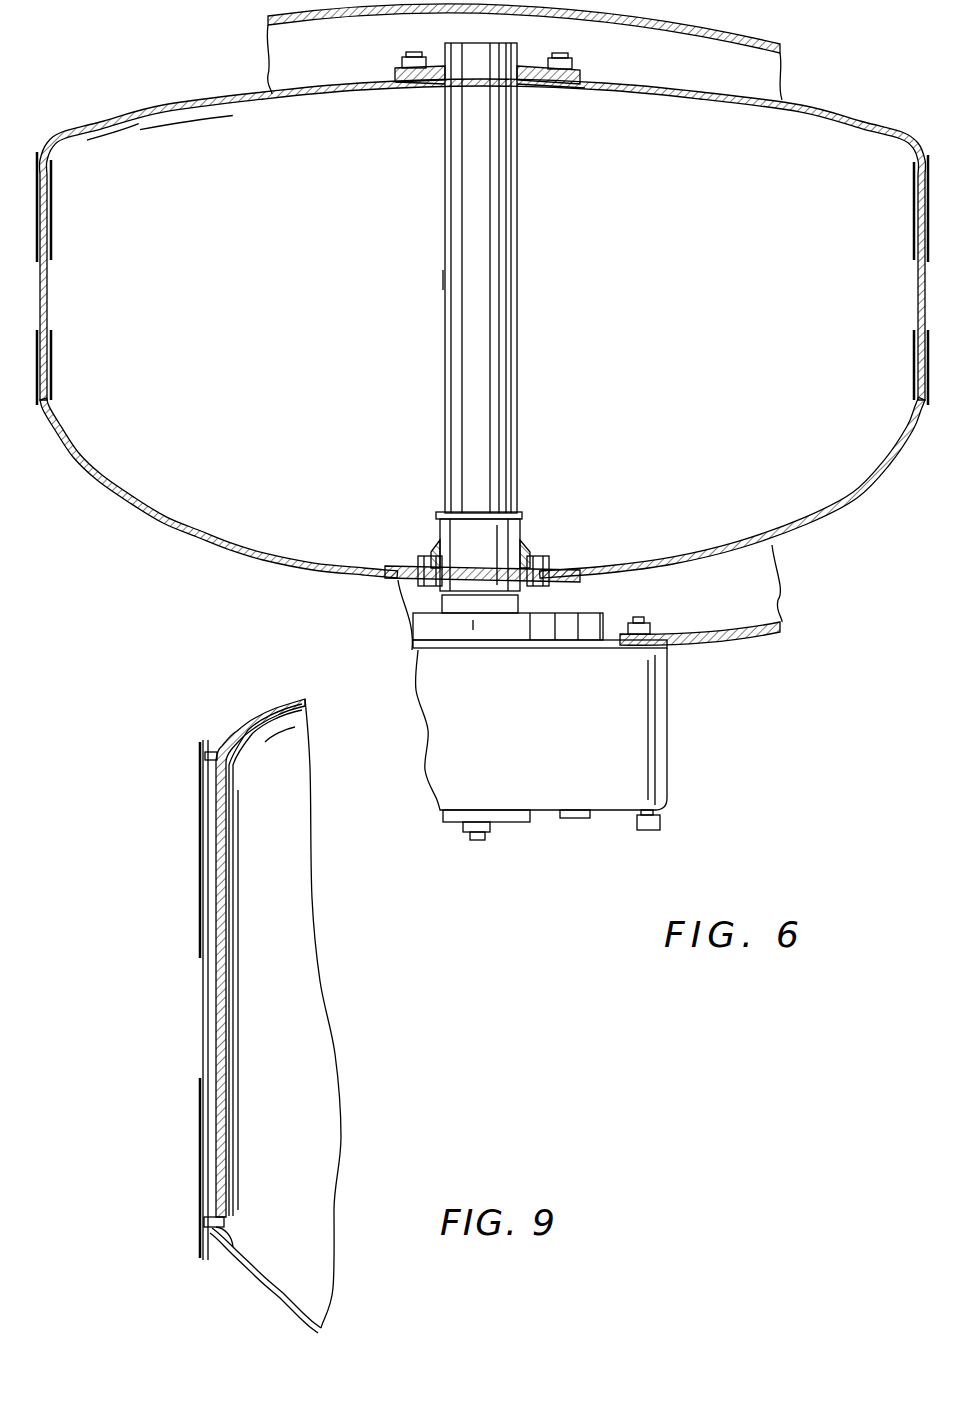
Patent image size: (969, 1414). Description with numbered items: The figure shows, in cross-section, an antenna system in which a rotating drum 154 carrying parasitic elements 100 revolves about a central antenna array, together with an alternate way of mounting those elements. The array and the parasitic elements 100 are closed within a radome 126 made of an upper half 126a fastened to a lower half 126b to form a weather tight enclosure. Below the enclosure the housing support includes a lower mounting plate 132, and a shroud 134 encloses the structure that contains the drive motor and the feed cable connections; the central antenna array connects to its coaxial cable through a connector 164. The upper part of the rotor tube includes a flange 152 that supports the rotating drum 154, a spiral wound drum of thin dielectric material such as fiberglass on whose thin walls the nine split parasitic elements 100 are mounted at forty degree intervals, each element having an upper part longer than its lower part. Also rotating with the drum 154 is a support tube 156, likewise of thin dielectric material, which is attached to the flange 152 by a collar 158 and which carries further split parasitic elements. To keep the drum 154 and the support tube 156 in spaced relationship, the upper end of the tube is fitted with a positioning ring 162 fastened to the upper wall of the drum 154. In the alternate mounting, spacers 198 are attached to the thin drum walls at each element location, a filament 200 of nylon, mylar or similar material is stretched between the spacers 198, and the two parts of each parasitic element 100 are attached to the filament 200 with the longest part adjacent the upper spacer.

In FIG. 6, the parasitic elements 100 is at (45, 345).
In FIG. 9, the parasitic elements 100 is at (204, 1085).
In FIG. 6, the radome 126 is at (745, 665).
In FIG. 6, the upper half 126a is at (632, 34).
In FIG. 6, the lower half 126b is at (775, 633).
In FIG. 6, the lower mounting plate 132 is at (620, 816).
In FIG. 6, the shroud 134 is at (685, 761).
In FIG. 6, the flange 152 is at (400, 578).
In FIG. 6, the rotating drum 154 is at (260, 547).
In FIG. 9, the rotating drum 154 is at (280, 705).
In FIG. 6, the support tube 156 is at (497, 318).
In FIG. 6, the collar 158 is at (526, 541).
In FIG. 6, the positioning ring 162 is at (436, 63).
In FIG. 6, the connector 164 is at (490, 826).
In FIG. 9, the spacers 198 is at (212, 750).
In FIG. 9, the filament 200 is at (206, 1028).